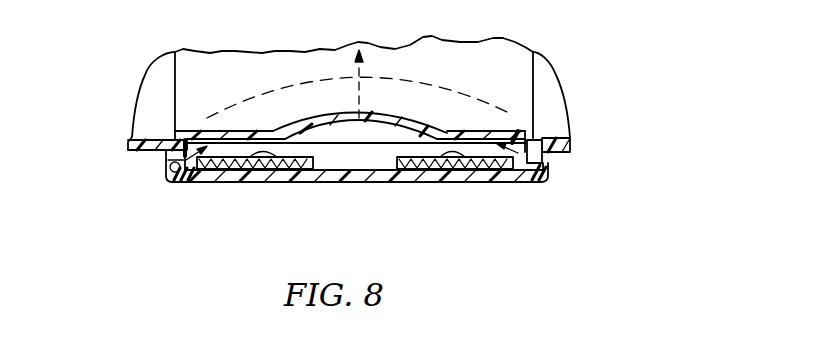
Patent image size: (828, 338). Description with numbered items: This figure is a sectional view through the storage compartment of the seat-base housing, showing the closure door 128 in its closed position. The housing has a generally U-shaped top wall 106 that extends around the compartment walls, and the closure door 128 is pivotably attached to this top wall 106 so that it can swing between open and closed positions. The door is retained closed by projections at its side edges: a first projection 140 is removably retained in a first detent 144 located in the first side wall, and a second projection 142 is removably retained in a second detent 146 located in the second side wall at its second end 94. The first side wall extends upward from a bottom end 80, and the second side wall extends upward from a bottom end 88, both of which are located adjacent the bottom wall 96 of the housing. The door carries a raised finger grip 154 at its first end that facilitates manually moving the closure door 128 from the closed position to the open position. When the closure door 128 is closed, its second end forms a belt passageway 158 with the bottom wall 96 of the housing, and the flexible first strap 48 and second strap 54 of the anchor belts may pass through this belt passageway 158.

The U-shaped top wall 106 is at (148, 100).
The closure door 128 is at (232, 78).
The raised finger grip 154 is at (383, 115).
The belt passageway 158 is at (370, 155).
The bottom end of first side wall 80 is at (523, 180).
The bottom wall 96 is at (365, 182).
The second strap 54 is at (272, 158).
The first strap 48 is at (450, 158).
The second projection 142 is at (163, 157).
The second detent 146 is at (182, 156).
The bottom end of second side wall 88 is at (183, 177).
The second end of second side wall 94 is at (193, 178).
The first projection 140 is at (543, 158).
The first detent 144 is at (545, 170).